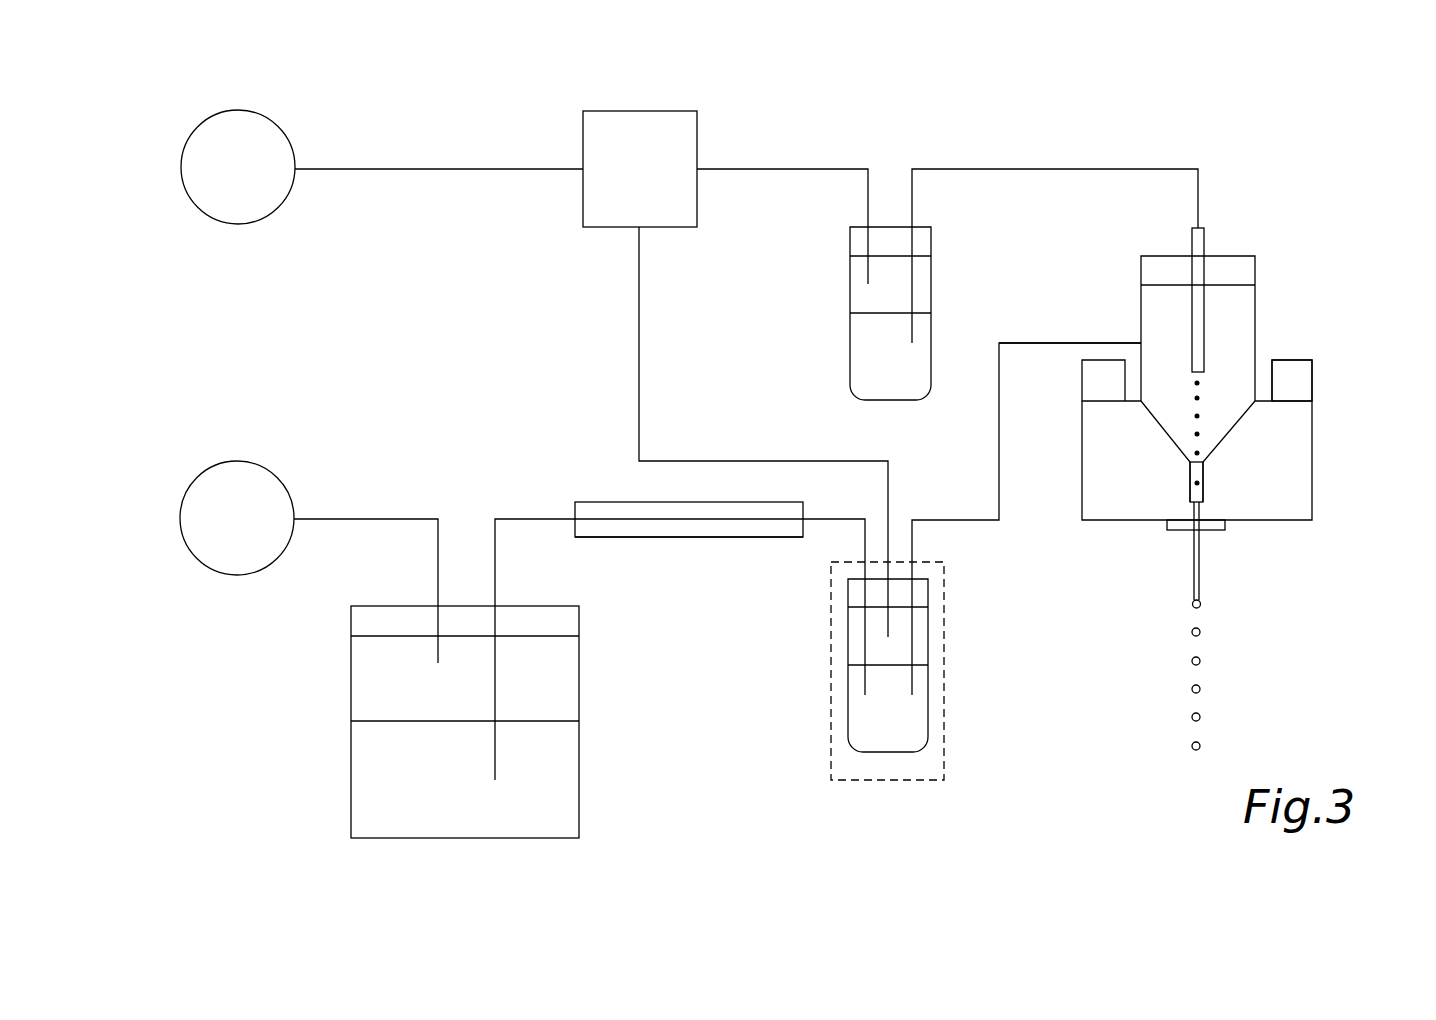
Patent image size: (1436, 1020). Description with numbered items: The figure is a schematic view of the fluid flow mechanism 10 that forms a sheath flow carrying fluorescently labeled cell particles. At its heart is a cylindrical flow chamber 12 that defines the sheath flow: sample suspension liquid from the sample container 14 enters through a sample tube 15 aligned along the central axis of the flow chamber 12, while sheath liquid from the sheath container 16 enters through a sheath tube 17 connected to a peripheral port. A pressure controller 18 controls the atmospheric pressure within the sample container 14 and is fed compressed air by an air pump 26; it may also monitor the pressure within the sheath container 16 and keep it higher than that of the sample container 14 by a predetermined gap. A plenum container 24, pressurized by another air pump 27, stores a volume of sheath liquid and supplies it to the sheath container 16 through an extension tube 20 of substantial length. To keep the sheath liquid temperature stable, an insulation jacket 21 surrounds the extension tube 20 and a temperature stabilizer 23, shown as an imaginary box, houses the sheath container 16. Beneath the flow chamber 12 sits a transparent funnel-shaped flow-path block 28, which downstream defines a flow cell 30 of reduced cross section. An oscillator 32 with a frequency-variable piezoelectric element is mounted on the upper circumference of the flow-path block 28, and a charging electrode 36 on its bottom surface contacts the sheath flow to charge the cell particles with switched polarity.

The fluid flow mechanism 10 is at (827, 24).
The cylindrical flow chamber 12 is at (1255, 320).
The sample container 14 is at (850, 342).
The sample tube 15 is at (1205, 242).
The sheath container 16 is at (848, 676).
The sheath tube 17 is at (1107, 342).
The pressure controller 18 is at (603, 227).
The extension tube 20 is at (658, 521).
The insulation jacket 21 is at (728, 537).
The temperature stabilizer 23 is at (831, 728).
The plenum container 24 is at (351, 770).
The air pump 26 is at (238, 224).
The air pump 27 is at (238, 458).
The funnel-shaped flow-path block 28 is at (1311, 457).
The flow cell 30 is at (1203, 480).
The oscillator 32 is at (1300, 378).
The charging electrode 36 is at (1173, 532).